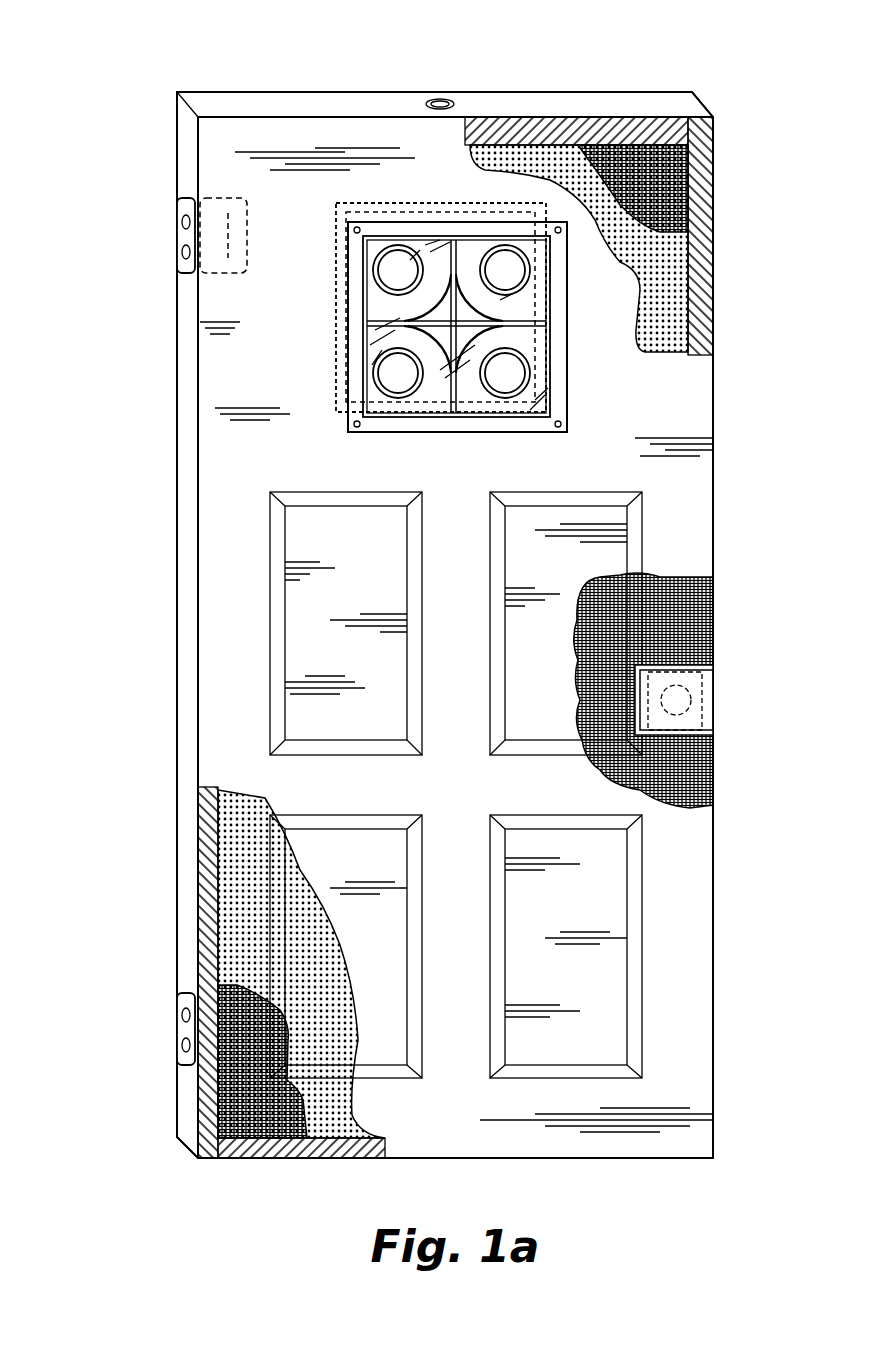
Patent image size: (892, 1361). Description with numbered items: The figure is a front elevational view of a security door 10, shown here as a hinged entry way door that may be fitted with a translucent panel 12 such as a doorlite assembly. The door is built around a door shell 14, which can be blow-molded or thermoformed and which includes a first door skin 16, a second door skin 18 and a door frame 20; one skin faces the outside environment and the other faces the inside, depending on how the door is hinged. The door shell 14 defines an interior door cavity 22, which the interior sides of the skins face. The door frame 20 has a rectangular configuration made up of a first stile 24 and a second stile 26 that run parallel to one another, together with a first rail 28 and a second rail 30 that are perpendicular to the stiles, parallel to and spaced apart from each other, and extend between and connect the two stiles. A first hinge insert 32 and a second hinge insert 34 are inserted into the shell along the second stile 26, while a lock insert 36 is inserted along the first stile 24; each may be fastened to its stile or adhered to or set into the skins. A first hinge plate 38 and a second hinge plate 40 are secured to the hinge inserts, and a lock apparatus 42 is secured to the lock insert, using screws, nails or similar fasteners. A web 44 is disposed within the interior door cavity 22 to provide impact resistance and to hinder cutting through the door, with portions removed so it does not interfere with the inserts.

The door 10 is at (423, 650).
The translucent panel 12 is at (390, 243).
The door shell 14 is at (648, 1160).
The first door skin 16 is at (215, 580).
The second door skin 18 is at (177, 612).
The door frame 20 is at (182, 773).
The interior door cavity 22 is at (270, 917).
The first stile 24 is at (215, 1117).
The second stile 26 is at (713, 178).
The first rail 28 is at (552, 102).
The second rail 30 is at (288, 1160).
The first hinge insert 32 is at (205, 195).
The second hinge insert 34 is at (195, 975).
The lock insert 36 is at (705, 650).
The first hinge plate 38 is at (180, 230).
The second hinge plate 40 is at (180, 1035).
The lock apparatus 42 is at (715, 705).
The web 44 is at (636, 135).